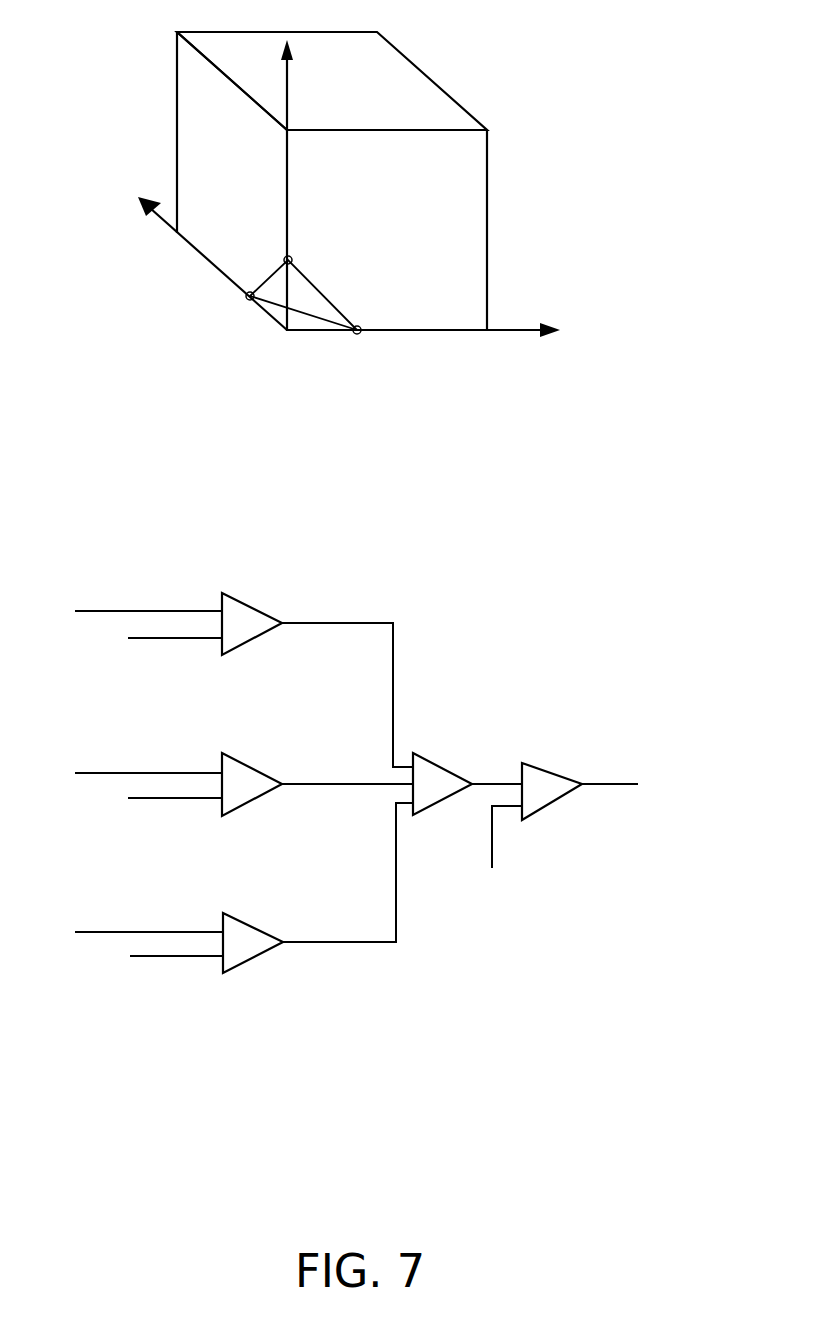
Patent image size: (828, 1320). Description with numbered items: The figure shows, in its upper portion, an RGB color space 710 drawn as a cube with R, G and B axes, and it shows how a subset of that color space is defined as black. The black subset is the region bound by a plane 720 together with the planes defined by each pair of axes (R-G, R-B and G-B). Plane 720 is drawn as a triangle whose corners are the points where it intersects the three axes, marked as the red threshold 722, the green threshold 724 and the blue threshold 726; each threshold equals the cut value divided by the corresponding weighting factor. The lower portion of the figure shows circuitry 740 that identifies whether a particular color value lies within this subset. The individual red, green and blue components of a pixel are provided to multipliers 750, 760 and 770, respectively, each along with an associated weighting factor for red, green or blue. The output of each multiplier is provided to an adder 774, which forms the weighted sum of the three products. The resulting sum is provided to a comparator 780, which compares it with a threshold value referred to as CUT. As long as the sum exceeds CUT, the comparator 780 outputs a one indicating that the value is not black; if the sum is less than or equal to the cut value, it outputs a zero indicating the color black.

The RGB color space 710 is at (463, 102).
The plane 720 is at (318, 285).
The red threshold point R_TH 722 is at (250, 296).
The green threshold point G_TH 724 is at (288, 260).
The blue threshold point B_TH 726 is at (357, 330).
The circuitry 740 is at (118, 545).
The multiplier 750 is at (250, 640).
The multiplier 760 is at (250, 803).
The multiplier 770 is at (250, 960).
The adder 774 is at (440, 762).
The comparator 780 is at (548, 812).